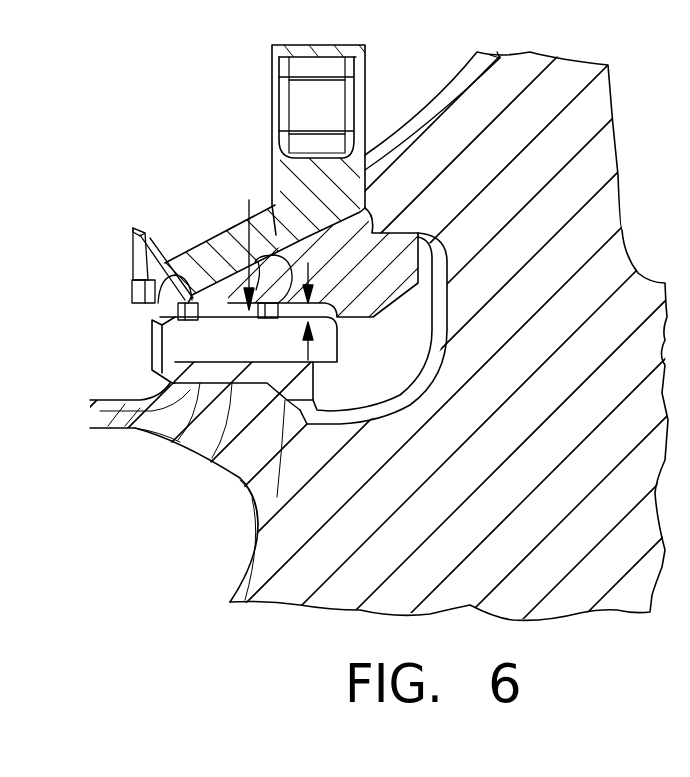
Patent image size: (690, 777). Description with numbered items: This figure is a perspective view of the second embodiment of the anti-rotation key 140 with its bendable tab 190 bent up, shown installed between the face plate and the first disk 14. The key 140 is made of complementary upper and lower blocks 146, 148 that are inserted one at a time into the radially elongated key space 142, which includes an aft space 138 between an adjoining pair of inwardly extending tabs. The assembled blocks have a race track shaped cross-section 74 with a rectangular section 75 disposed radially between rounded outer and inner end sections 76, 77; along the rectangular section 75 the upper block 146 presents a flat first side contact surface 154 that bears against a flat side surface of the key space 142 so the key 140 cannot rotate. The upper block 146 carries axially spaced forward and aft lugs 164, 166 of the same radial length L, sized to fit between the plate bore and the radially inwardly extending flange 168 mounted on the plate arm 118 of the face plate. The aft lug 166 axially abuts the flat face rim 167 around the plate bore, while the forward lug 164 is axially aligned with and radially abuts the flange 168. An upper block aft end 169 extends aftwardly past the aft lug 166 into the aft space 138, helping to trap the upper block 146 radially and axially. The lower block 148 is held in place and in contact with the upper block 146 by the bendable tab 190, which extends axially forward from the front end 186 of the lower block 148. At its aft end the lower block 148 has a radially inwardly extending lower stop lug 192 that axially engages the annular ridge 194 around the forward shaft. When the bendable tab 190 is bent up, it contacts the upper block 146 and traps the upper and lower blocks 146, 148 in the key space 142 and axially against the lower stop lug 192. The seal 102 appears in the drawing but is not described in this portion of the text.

The first disk 14 is at (597, 178).
The seal 102 is at (133, 231).
The plate arm 118 is at (197, 236).
The key space 142 is at (249, 205).
The upper block 146 is at (226, 231).
The aft lug 166 is at (258, 255).
The forward lug 164 is at (134, 229).
The radially inwardly extending flange 168 is at (142, 272).
The outer end section 76 is at (158, 290).
The race track shaped cross-section 74 is at (178, 312).
The key 140 is at (130, 335).
The bendable tab 190 is at (148, 355).
The inner end section 77 is at (158, 384).
The front end 186 is at (145, 422).
The lower block 148 is at (157, 434).
The rectangular section 75 is at (192, 440).
The annular ridge 194 is at (220, 465).
The lower stop lug 192 is at (262, 511).
The flat face rim 167 is at (256, 318).
The aft space 138 is at (335, 340).
The upper flat first side contact surface 154 is at (313, 380).
The upper block aft end 169 is at (298, 400).
The radial length L is at (305, 345).